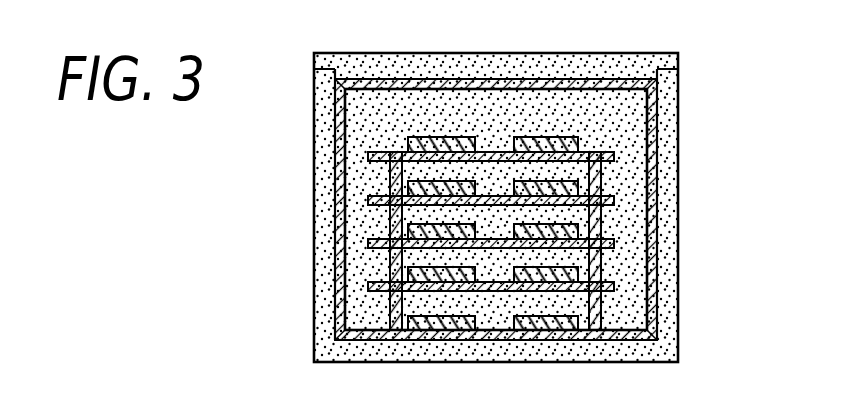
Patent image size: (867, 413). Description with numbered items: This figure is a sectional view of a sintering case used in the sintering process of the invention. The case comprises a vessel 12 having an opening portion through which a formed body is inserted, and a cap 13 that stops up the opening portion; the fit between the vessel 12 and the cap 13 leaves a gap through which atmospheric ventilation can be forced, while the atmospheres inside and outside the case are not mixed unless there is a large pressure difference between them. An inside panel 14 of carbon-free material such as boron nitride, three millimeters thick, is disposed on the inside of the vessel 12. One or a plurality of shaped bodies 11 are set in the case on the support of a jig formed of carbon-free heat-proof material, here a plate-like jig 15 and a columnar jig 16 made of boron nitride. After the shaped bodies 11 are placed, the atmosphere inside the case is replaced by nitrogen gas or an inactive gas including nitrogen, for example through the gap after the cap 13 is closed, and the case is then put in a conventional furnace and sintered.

The shaped bodies 11 is at (575, 187).
The vessel 12 is at (672, 315).
The cap 13 is at (600, 53).
The inside panel 14 is at (662, 197).
The plate-like jig 15 is at (615, 243).
The columnar jig 16 is at (601, 265).